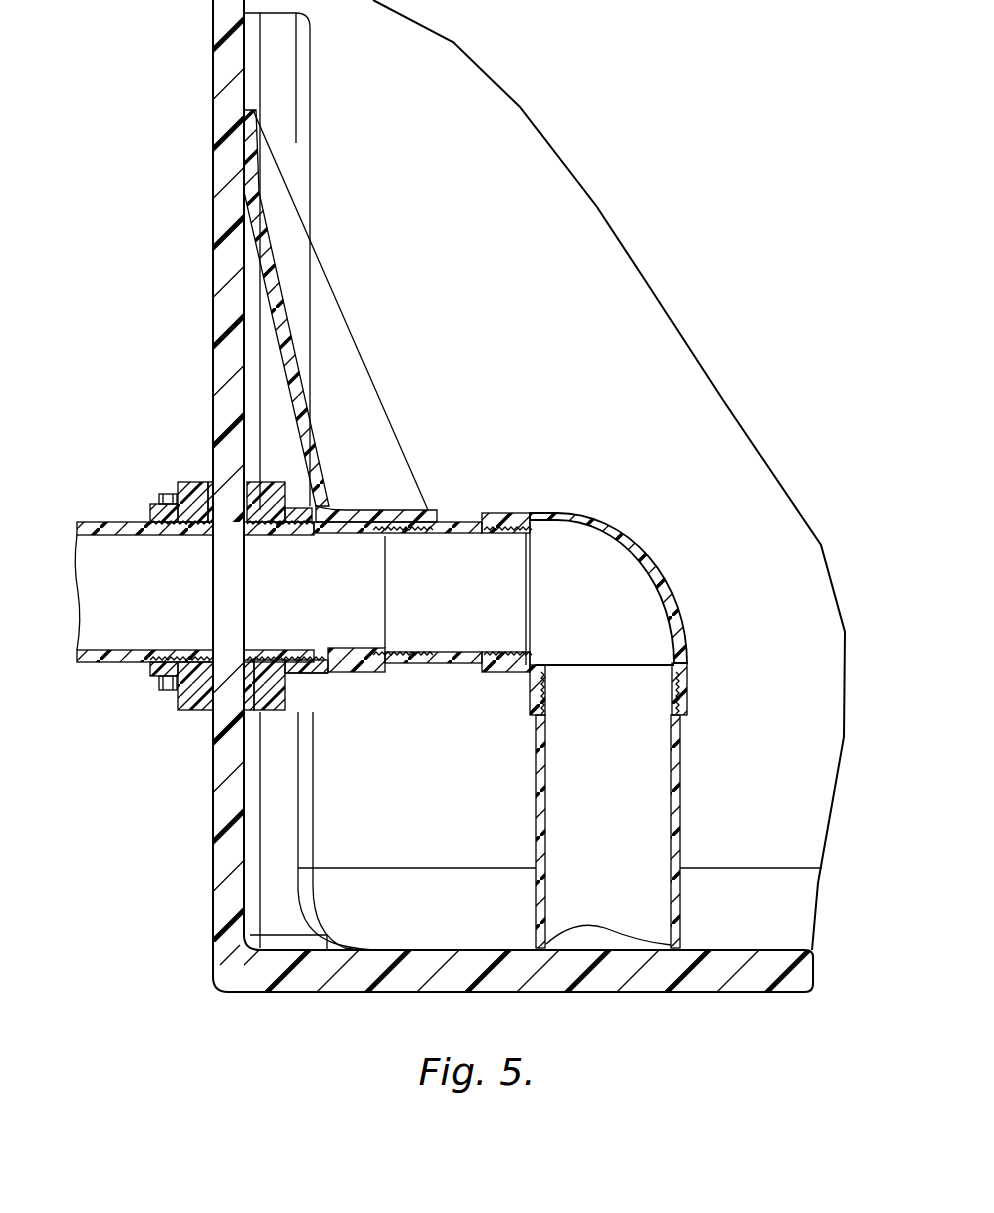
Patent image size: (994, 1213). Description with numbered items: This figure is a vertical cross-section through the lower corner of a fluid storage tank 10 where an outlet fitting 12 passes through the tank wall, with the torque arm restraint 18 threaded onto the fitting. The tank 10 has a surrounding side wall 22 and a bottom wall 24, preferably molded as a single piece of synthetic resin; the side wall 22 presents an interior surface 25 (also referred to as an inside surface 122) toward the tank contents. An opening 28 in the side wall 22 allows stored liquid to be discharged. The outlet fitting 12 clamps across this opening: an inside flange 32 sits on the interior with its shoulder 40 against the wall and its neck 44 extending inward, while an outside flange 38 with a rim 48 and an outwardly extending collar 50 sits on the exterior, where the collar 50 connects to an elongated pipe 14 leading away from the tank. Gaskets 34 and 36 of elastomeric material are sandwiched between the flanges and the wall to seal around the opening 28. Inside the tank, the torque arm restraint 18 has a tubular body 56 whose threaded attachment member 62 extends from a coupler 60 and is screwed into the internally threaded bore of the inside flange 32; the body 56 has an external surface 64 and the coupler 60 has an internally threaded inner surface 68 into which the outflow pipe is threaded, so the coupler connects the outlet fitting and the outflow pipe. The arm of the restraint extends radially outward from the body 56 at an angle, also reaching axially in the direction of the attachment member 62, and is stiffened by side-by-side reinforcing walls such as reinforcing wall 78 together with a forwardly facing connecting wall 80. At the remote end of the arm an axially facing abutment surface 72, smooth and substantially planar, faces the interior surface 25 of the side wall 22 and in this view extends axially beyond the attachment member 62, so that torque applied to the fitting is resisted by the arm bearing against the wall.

The fluid storage tank 10 is at (450, 531).
The outlet fitting 12 is at (233, 600).
The elongated pipe 14 is at (130, 662).
The torque arm restraint 18 is at (354, 316).
The side wall 22 is at (214, 845).
The bottom wall 24 is at (337, 993).
The interior surface 25 is at (245, 80).
The opening 28 is at (237, 530).
The inside flange 32 is at (278, 712).
The gasket 34 is at (248, 712).
The gasket 36 is at (213, 712).
The outside flange 38 is at (193, 483).
The shoulder 40 is at (260, 482).
The neck 44 is at (304, 677).
The rim 48 is at (205, 483).
The collar 50 is at (160, 510).
The body 56 is at (352, 505).
The coupler 60 is at (382, 514).
The threaded attachment member 62 is at (385, 597).
The external surface 64 is at (440, 512).
The internally threaded inner surface 68 is at (377, 525).
The abutment surface 72 is at (237, 150).
The reinforcing wall 78 is at (345, 327).
The connecting wall 80 is at (302, 383).
The inside surface 122 is at (250, 247).